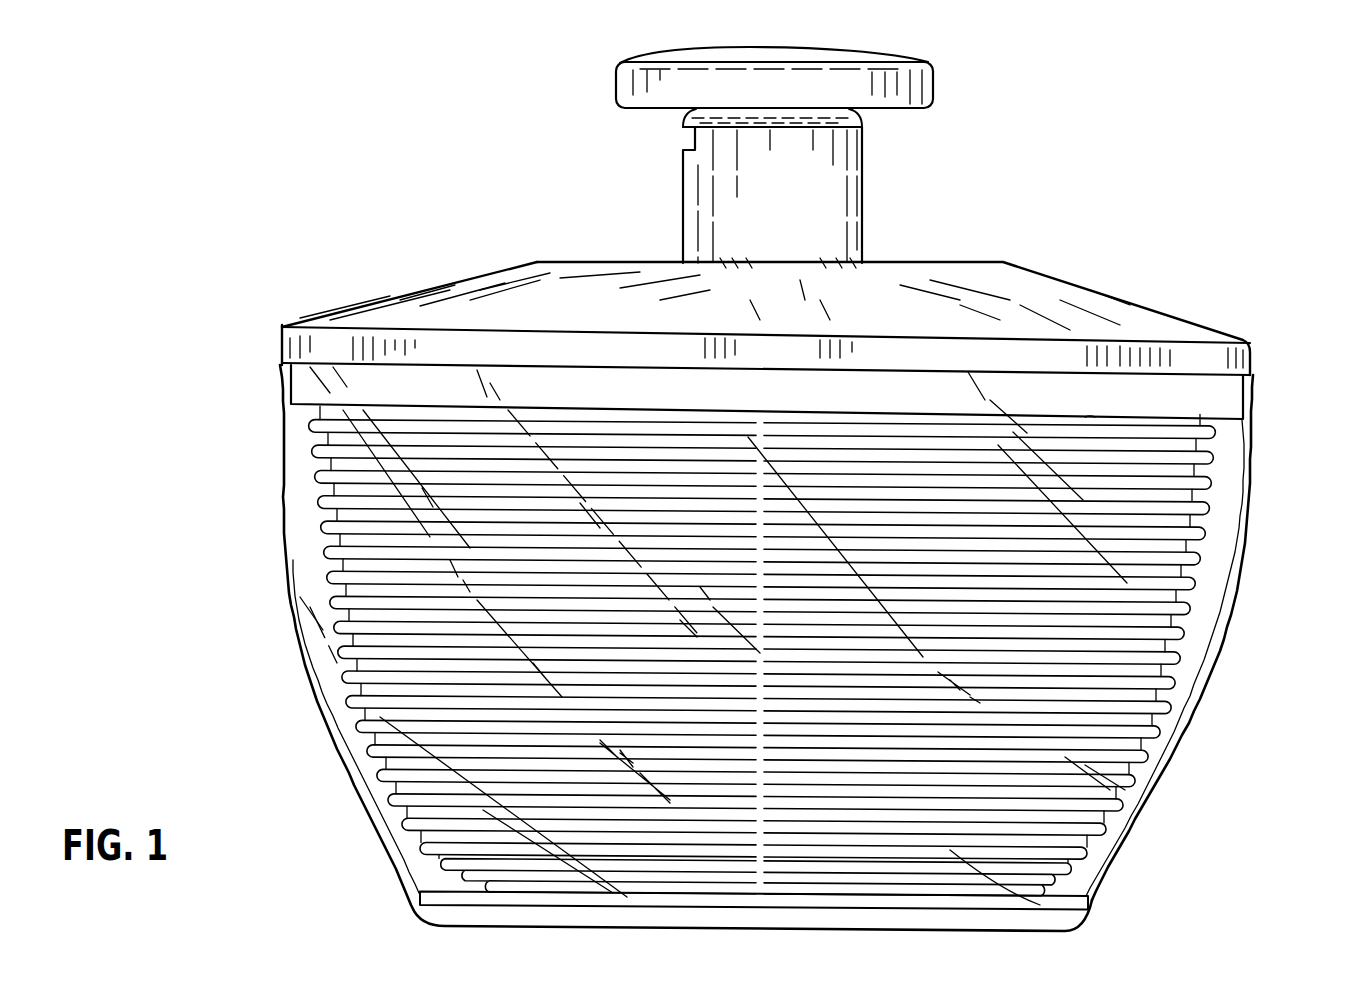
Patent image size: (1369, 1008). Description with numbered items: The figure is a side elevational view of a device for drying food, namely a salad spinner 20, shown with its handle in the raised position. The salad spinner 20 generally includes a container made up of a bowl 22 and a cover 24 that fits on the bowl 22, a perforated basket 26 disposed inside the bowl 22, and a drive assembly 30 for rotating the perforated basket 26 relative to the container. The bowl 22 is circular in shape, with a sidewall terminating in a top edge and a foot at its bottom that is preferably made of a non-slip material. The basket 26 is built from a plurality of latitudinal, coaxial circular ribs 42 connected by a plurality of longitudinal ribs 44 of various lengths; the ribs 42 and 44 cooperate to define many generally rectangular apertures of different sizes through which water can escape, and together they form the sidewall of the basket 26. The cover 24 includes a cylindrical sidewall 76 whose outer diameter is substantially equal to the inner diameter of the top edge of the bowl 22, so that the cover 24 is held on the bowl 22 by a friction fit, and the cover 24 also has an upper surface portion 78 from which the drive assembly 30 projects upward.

The salad spinner 20 is at (1188, 237).
The bowl 22 is at (1112, 875).
The cover 24 is at (1190, 315).
The perforated basket 26 is at (1040, 455).
The drive assembly 30 is at (950, 108).
The latitudinal circular ribs 42 is at (1212, 507).
The longitudinal ribs 44 is at (318, 458).
The cylindrical sidewall 76 is at (297, 381).
The upper surface portion 78 is at (487, 275).